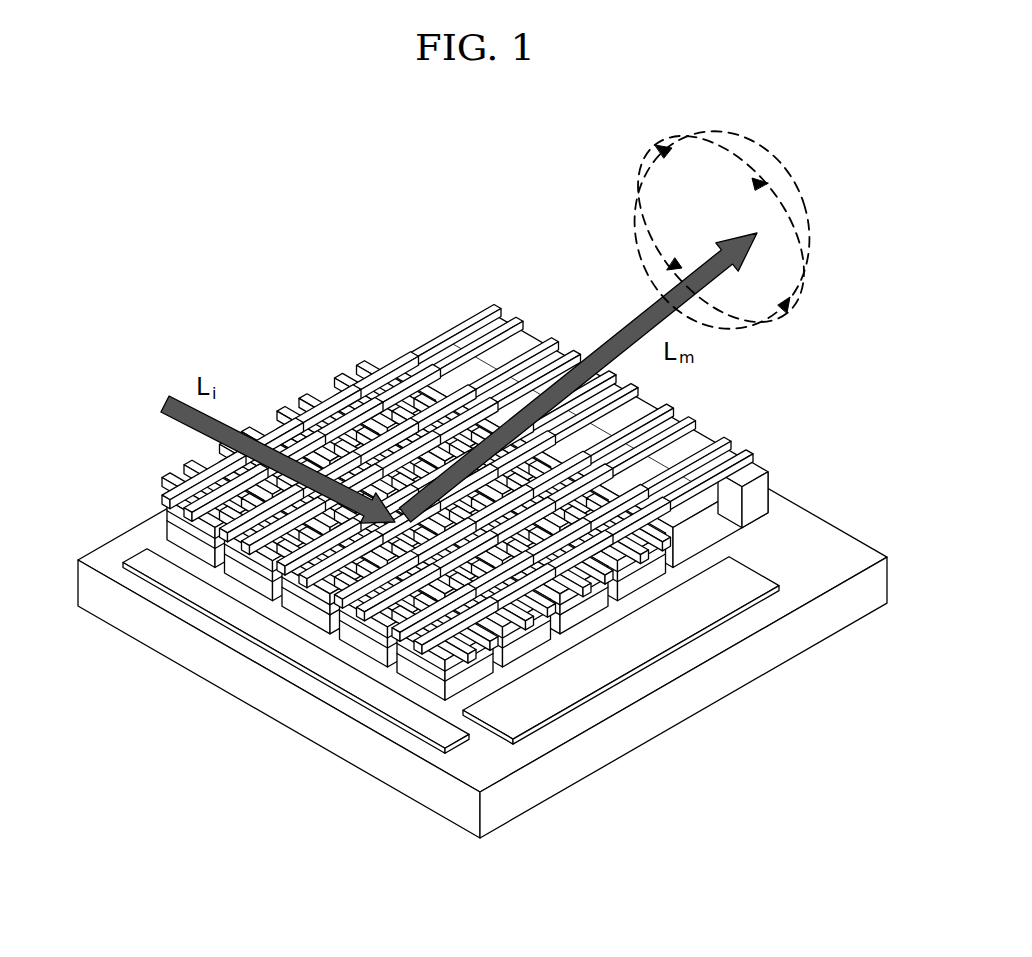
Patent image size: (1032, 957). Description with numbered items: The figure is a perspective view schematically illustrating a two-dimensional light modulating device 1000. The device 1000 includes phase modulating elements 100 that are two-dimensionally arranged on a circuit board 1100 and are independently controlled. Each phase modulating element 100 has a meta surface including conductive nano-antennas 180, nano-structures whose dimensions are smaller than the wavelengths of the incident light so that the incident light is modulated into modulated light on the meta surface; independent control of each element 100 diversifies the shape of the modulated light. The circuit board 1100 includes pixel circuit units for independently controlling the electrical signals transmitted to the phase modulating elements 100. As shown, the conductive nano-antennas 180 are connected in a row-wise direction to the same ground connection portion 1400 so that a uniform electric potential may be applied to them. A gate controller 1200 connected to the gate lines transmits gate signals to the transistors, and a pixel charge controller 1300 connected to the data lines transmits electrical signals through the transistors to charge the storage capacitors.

The two-dimensional light modulating device 1000 is at (212, 268).
The phase modulating element 100 is at (166, 519).
The conductive nano-antenna 180 is at (186, 490).
The circuit board 1100 is at (667, 718).
The gate controller 1200 is at (404, 712).
The pixel charge controller 1300 is at (565, 690).
The ground connection portion 1400 is at (761, 470).